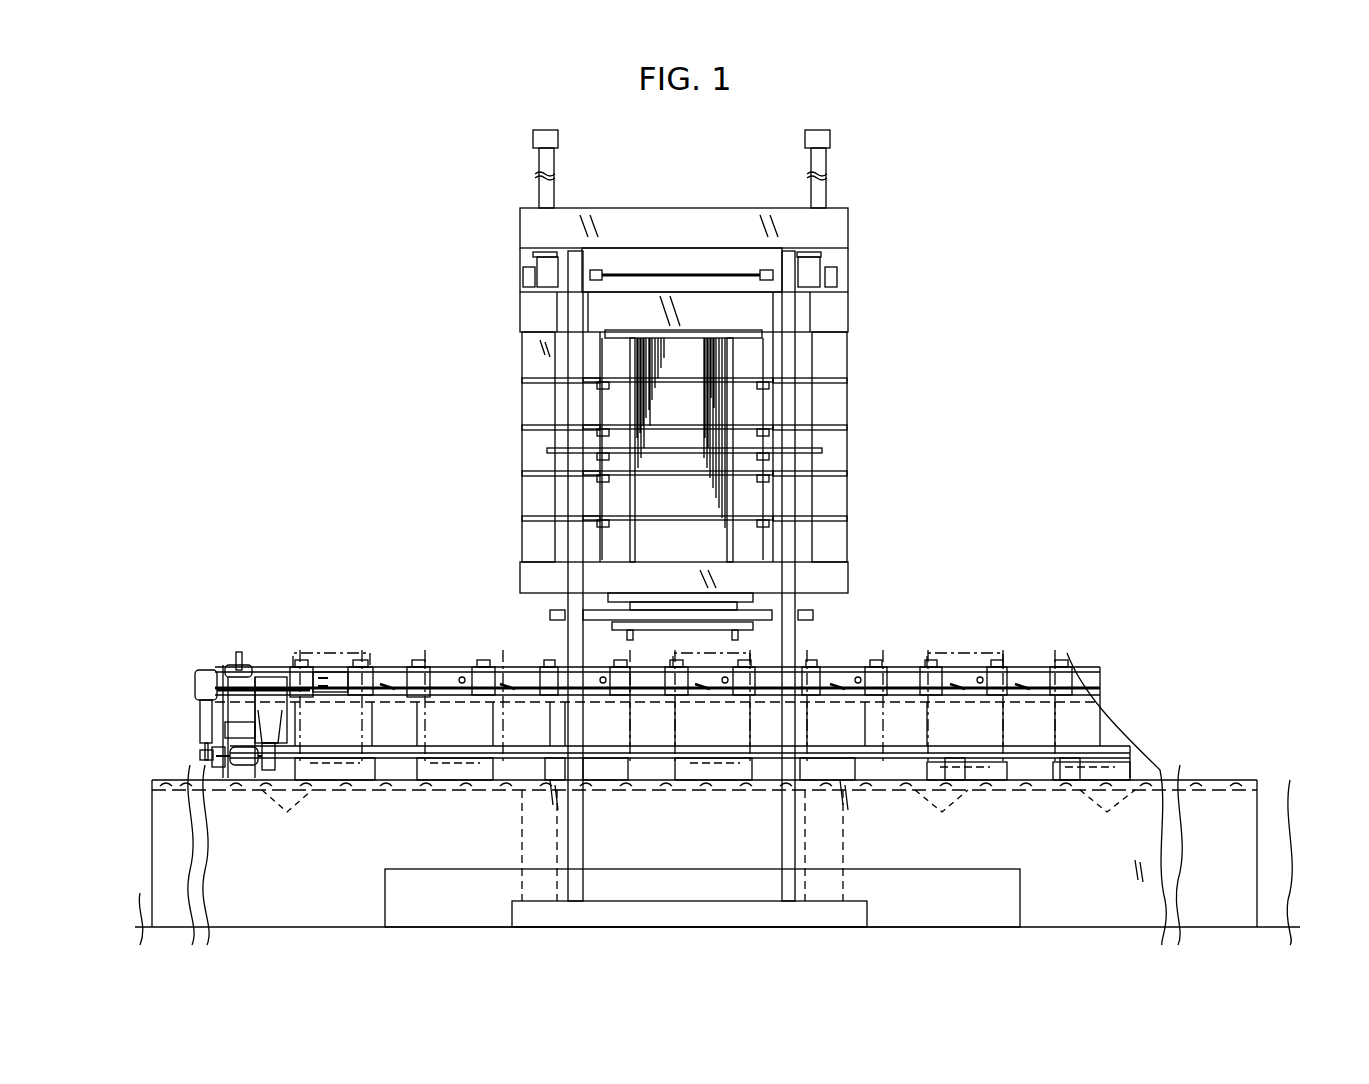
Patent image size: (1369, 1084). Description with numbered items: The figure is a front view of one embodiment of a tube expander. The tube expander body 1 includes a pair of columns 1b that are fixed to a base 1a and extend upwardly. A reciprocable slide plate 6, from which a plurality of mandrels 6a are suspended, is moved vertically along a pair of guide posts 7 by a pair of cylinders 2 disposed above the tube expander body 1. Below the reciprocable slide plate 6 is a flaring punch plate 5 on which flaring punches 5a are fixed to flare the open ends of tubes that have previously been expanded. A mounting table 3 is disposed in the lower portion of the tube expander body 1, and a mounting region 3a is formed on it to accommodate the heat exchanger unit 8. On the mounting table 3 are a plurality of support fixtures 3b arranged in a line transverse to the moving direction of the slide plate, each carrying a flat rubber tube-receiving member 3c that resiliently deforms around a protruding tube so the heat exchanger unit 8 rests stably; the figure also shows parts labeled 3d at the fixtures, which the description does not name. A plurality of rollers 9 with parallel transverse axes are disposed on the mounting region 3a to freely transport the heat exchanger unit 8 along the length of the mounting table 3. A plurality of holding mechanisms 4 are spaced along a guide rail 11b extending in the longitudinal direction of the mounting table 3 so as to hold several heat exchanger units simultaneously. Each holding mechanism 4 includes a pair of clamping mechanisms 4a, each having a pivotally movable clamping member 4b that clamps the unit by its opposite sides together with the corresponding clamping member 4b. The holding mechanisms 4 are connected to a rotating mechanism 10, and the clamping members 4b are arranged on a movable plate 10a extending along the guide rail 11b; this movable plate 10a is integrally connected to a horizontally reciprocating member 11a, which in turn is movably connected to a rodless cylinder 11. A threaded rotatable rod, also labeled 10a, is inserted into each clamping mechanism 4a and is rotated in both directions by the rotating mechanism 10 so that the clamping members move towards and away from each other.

The tube expander body 1 is at (852, 270).
The base 1a is at (862, 913).
The columns 1b is at (521, 497).
The cylinders 2 is at (803, 158).
The mounting table 3 is at (155, 780).
The mounting region 3a is at (152, 782).
The support fixtures 3b is at (342, 782).
The tube-receiving member 3c is at (540, 790).
The brackets 3d is at (558, 772).
The holding mechanisms 4 is at (296, 668).
The clamping mechanisms 4a is at (303, 672).
The clamping member 4b is at (636, 690).
The flaring punch plate 5 is at (812, 608).
The flaring punches 5a is at (605, 628).
The reciprocable slide plate 6 is at (526, 313).
The mandrels 6a is at (736, 490).
The guide posts 7 is at (573, 398).
The heat exchanger unit 8 is at (360, 652).
The rollers 9 is at (698, 819).
The rotating mechanism 10 is at (215, 682).
The movable plate 10a is at (392, 680).
The rodless cylinder 11 is at (204, 786).
The horizontally reciprocating member 11a is at (274, 712).
The guide rail 11b is at (328, 678).